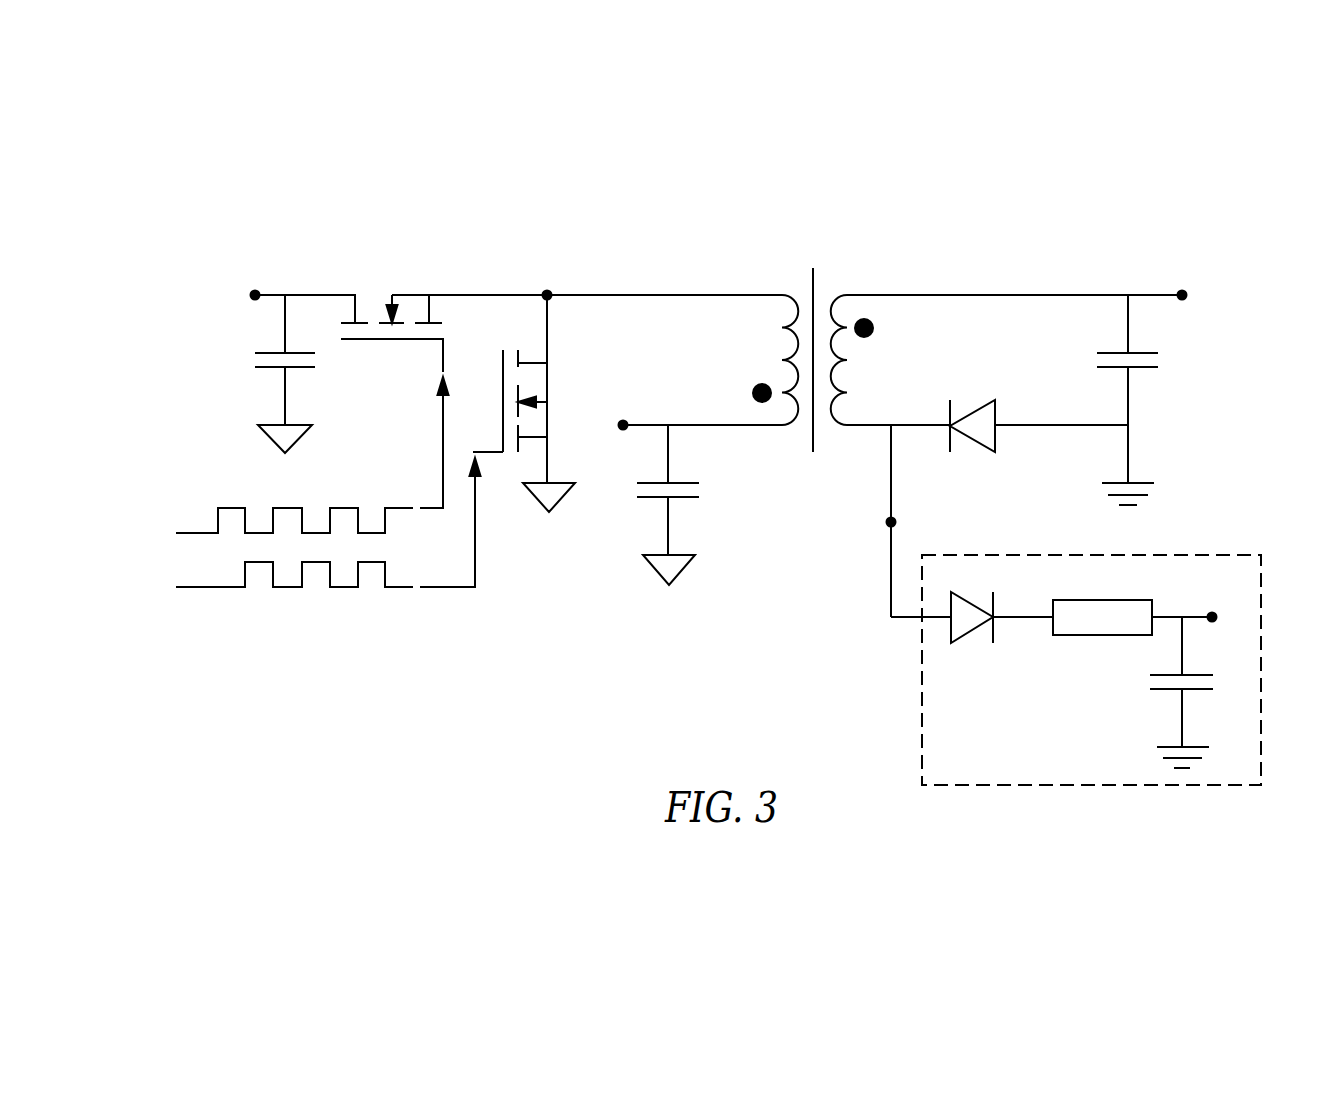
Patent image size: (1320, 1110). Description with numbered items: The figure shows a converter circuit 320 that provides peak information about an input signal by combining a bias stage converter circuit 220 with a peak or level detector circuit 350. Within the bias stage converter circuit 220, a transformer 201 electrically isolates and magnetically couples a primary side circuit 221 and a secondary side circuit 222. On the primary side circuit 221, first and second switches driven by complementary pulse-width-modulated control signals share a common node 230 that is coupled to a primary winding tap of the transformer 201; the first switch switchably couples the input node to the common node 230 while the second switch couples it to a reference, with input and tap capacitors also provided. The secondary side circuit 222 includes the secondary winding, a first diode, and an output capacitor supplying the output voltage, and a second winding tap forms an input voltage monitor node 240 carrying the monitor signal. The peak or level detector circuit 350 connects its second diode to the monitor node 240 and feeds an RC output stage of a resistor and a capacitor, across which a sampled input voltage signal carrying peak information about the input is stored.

The converter circuit 320 is at (1148, 142).
The bias stage converter circuit 220 is at (325, 197).
The primary side circuit 221 is at (460, 248).
The common node 230 is at (551, 292).
The transformer 201 is at (828, 280).
The secondary side circuit 222 is at (1032, 247).
The input voltage monitor node 240 is at (895, 522).
The peak or level detector circuit 350 is at (1090, 555).